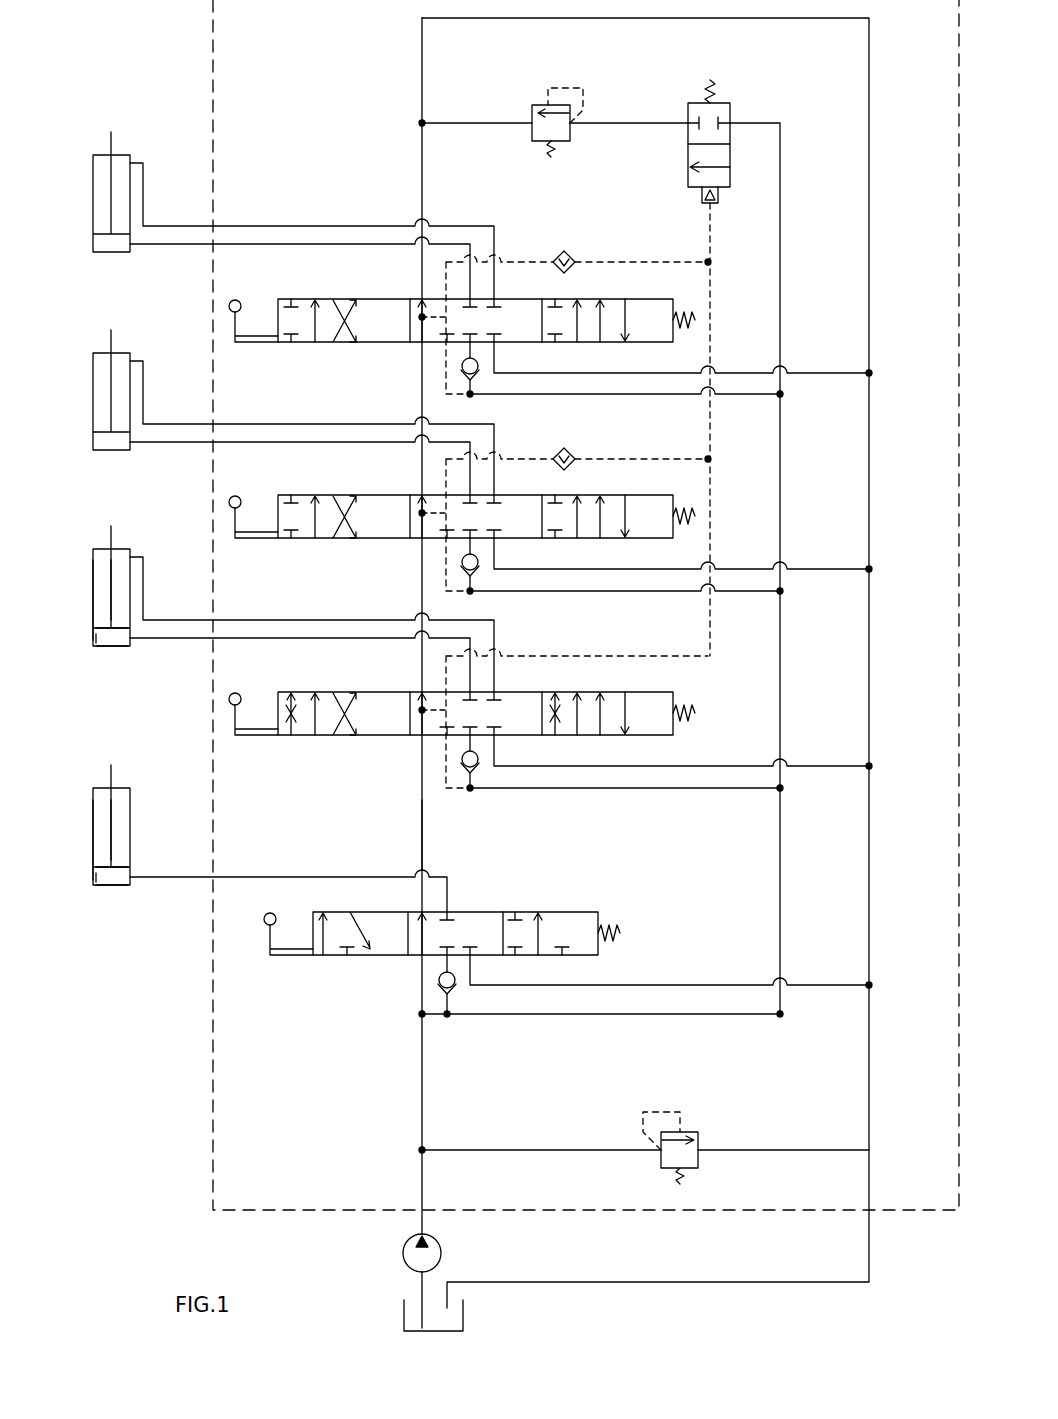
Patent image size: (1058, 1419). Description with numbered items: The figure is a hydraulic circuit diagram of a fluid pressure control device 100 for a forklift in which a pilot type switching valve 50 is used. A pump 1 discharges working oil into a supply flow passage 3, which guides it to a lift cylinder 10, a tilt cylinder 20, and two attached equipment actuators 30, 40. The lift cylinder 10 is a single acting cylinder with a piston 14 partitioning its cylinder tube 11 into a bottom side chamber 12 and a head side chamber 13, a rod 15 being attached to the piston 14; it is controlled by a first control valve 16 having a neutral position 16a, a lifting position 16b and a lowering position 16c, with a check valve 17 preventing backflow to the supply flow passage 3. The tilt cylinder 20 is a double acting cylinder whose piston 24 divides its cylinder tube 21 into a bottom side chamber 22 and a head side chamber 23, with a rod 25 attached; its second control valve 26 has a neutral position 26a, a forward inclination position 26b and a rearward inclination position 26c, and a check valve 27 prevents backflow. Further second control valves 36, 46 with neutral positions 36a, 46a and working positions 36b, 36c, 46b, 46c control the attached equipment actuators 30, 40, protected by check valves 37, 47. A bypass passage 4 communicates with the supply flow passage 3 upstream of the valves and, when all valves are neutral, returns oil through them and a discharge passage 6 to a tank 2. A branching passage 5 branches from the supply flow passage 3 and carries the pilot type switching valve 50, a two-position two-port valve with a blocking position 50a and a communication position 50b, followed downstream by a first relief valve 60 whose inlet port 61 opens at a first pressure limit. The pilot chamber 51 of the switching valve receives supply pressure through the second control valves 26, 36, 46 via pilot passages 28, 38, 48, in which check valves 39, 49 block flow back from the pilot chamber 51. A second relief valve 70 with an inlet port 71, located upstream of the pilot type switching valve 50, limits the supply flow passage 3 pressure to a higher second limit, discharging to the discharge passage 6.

The fluid pressure control device 100 is at (213, 48).
The pump 1 is at (404, 1258).
The tank 2 is at (464, 1310).
The supply flow passage 3 is at (735, 396).
The bypass passage 4 is at (424, 822).
The branching passage 5 is at (482, 123).
The discharge passage 6 is at (420, 75).
The lift cylinder 10 is at (100, 781).
The cylinder tube 11 is at (93, 816).
The bottom side chamber 12 is at (122, 877).
The head side chamber 13 is at (118, 800).
The piston 14 is at (102, 877).
The rod 15 is at (100, 854).
The first control valve 16 is at (307, 956).
The neutral position 16a is at (461, 923).
The lifting position 16b is at (555, 923).
The lowering position 16c is at (363, 923).
The check valve 17 is at (455, 988).
The tilt cylinder 20 is at (100, 542).
The cylinder tube 21 is at (93, 576).
The bottom side chamber 22 is at (122, 640).
The head side chamber 23 is at (118, 580).
The piston 24 is at (102, 638).
The rod 25 is at (100, 614).
The second control valve 26 is at (272, 736).
The neutral position 26a is at (479, 702).
The forward inclination position 26b is at (609, 702).
The rearward inclination position 26c is at (348, 702).
The check valve 27 is at (458, 763).
The pilot passage 28 is at (606, 656).
The attached equipment actuator 30 is at (100, 346).
The second control valve 36 is at (272, 539).
The neutral position 36a is at (479, 505).
The working position 36b is at (608, 505).
The working position 36c is at (347, 505).
The check valve 37 is at (458, 566).
The pilot passage 38 is at (615, 459).
The check valve 39 is at (558, 454).
The attached equipment actuator 40 is at (100, 148).
The second control valve 46 is at (272, 343).
The neutral position 46a is at (479, 309).
The working position 46b is at (608, 309).
The working position 46c is at (347, 309).
The check valve 47 is at (458, 370).
The pilot passage 48 is at (615, 262).
The check valve 49 is at (558, 257).
The pilot type switching valve 50 is at (692, 98).
The blocking position 50a is at (731, 114).
The communication position 50b is at (732, 176).
The pilot chamber 51 is at (702, 193).
The first relief valve 60 is at (535, 101).
The inlet port 61 is at (572, 125).
The second relief valve 70 is at (697, 1123).
The inlet port 71 is at (661, 1160).